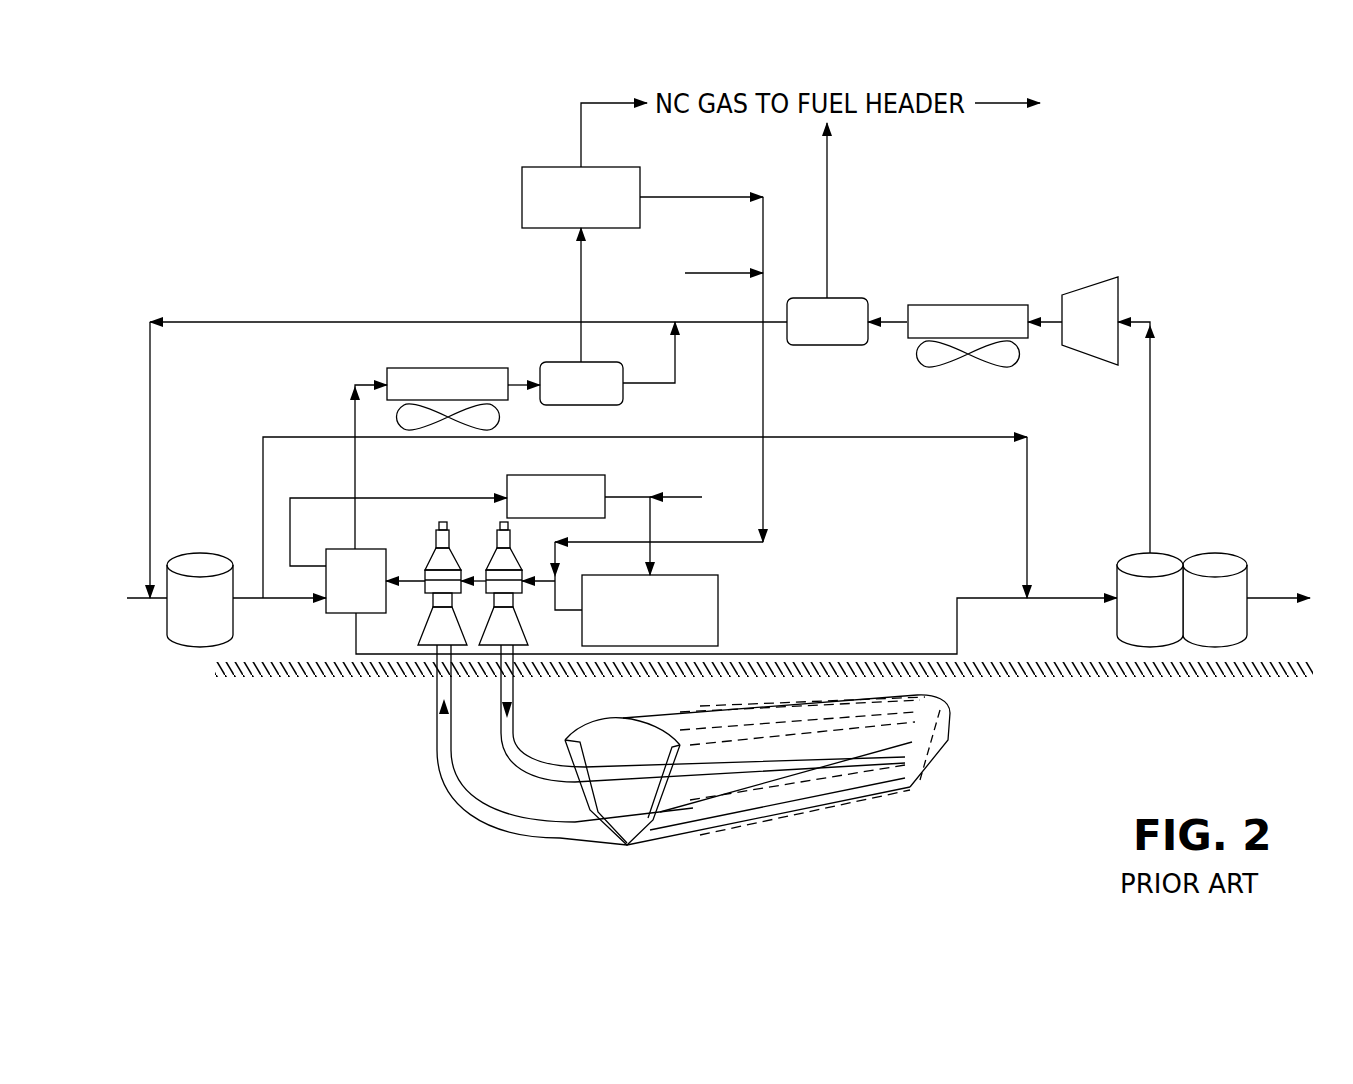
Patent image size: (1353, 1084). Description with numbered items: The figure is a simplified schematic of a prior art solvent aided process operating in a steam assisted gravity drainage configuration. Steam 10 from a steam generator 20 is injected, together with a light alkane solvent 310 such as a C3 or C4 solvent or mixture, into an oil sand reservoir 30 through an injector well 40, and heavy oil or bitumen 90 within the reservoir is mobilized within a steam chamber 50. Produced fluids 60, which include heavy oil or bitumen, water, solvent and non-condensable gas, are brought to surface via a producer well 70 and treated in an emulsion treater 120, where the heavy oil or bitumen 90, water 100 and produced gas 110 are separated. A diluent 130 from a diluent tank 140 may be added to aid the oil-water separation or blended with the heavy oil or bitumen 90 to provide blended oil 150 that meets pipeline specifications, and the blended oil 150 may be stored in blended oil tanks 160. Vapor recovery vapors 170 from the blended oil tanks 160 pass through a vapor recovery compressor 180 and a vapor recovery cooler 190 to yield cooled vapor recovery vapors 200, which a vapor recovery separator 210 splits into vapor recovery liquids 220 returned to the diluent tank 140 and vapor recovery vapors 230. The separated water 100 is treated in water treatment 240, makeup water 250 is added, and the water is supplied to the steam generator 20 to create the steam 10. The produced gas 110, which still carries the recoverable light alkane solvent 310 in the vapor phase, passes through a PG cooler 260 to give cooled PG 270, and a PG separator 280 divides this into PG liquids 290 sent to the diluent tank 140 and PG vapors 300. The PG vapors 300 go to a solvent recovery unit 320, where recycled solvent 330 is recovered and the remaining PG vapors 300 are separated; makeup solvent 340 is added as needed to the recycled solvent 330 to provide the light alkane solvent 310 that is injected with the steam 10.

The steam 10 is at (572, 611).
The steam generator 20 is at (636, 626).
The oil sand reservoir 30 is at (1045, 794).
The injector well 40 is at (513, 687).
The steam chamber 50 is at (950, 722).
The produced fluids 60 is at (415, 568).
The producer well 70 is at (437, 692).
The heavy oil or bitumen 90 is at (990, 597).
The water 100 is at (390, 498).
The produced gas 110 is at (355, 470).
The emulsion treater 120 is at (336, 593).
The diluent 130 is at (858, 437).
The diluent tank 140 is at (180, 620).
The blended oil 150 is at (1277, 596).
The blended oil tanks 160 is at (1130, 620).
The vapor recovery vapors 170 is at (1150, 447).
The vapor recovery compressor 180 is at (1070, 336).
The vapor recovery cooler 190 is at (948, 336).
The cooled vapor recovery vapors 200 is at (893, 321).
The vapor recovery separator 210 is at (808, 336).
The vapor recovery liquids 220 is at (190, 324).
The vapor recovery vapors 230 is at (827, 196).
The water treatment 240 is at (536, 509).
The makeup water 250 is at (699, 499).
The PG cooler 260 is at (428, 398).
The cooled PG 270 is at (517, 368).
The PG separator 280 is at (561, 396).
The PG liquids 290 is at (676, 352).
The PG vapors 300 is at (581, 280).
The light alkane solvent 310 is at (720, 543).
The solvent recovery unit 320 is at (561, 211).
The recycled solvent 330 is at (723, 195).
The makeup solvent 340 is at (699, 275).